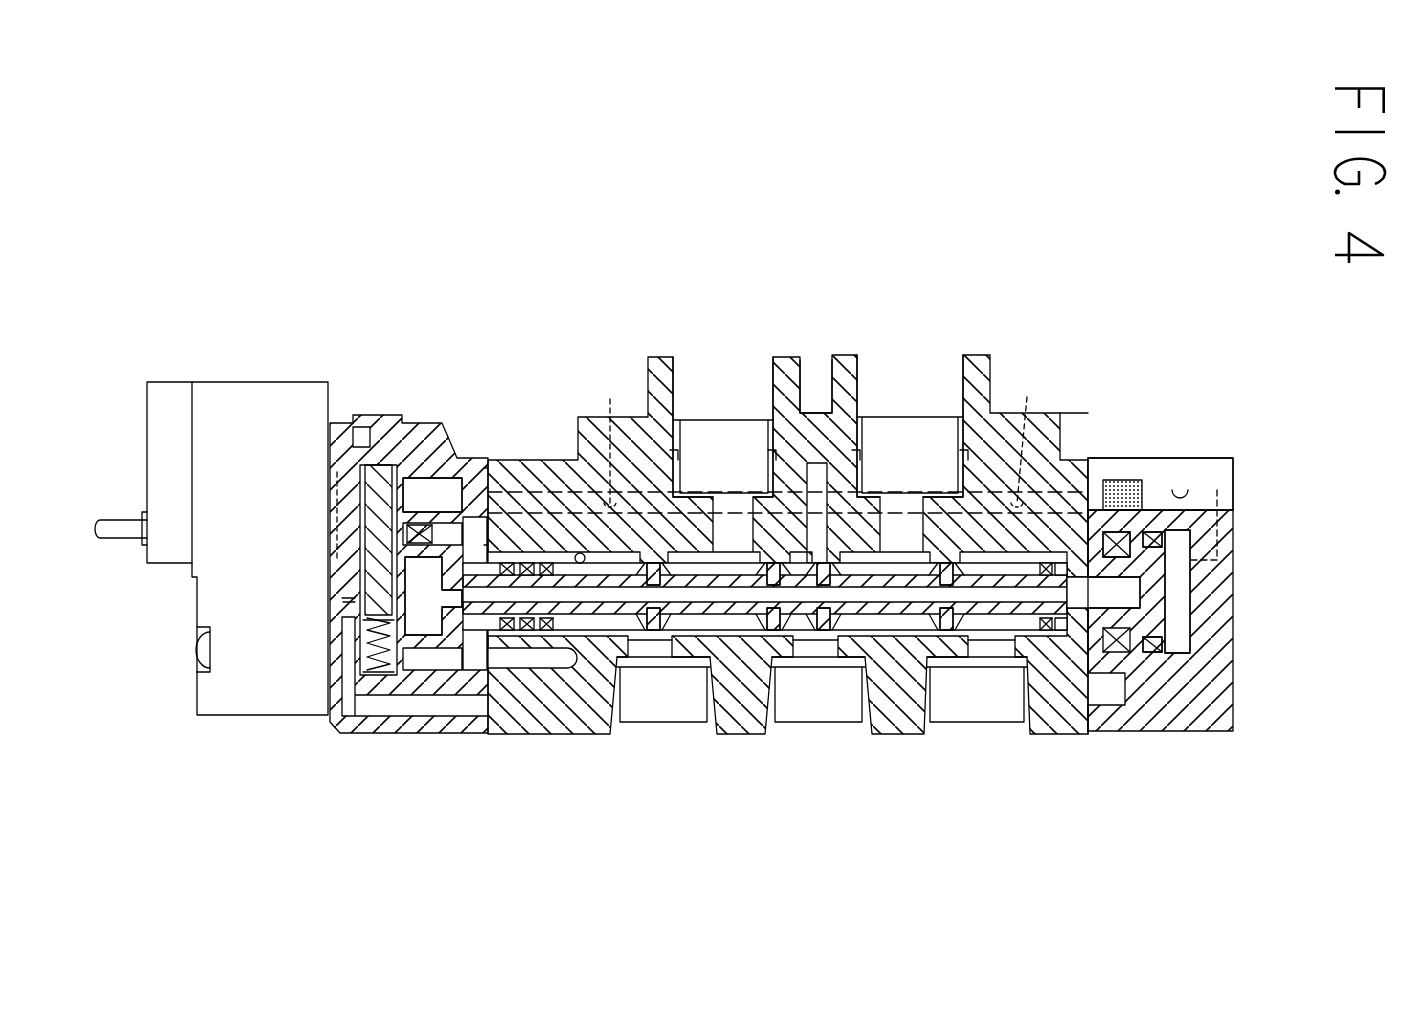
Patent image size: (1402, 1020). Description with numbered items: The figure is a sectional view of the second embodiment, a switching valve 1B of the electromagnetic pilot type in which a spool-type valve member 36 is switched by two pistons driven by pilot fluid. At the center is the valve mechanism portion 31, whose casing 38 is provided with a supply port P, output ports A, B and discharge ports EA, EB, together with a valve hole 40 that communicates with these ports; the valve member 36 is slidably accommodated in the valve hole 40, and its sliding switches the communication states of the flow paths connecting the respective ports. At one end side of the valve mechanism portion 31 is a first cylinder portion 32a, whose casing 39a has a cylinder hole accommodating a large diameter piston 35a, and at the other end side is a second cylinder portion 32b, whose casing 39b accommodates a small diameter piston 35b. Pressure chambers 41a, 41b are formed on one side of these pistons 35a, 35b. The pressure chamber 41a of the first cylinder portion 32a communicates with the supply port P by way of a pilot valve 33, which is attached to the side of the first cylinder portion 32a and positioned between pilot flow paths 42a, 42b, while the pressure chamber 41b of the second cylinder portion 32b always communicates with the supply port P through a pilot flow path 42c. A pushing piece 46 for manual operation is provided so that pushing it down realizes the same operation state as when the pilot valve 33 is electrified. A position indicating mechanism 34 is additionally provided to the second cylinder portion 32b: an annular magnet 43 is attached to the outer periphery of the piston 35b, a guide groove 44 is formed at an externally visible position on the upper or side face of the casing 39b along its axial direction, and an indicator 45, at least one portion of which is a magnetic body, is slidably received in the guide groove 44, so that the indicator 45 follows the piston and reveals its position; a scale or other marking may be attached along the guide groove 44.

The switching valve 1B is at (1125, 221).
The valve mechanism portion 31 is at (837, 271).
The first cylinder portion 32a is at (402, 355).
The second cylinder portion 32b is at (1131, 358).
The pilot valve 33 is at (260, 388).
The position indicating mechanism 34 is at (1163, 430).
The large diameter piston 35a is at (453, 530).
The small diameter piston 35b is at (1152, 608).
The valve member 36 is at (900, 605).
The casing 38 is at (550, 700).
The casing 39a is at (380, 722).
The casing 39b is at (1162, 700).
The valve hole 40 is at (579, 553).
The pressure chamber 41a is at (427, 610).
The pressure chamber 41b is at (1177, 630).
The pilot flow path 42a is at (607, 436).
The pilot flow path 42b is at (343, 600).
The pilot flow path 42c is at (1033, 435).
The annular magnet 43 is at (1112, 543).
The guide groove 44 is at (1187, 492).
The indicator 45 is at (1125, 490).
The pushing piece 46 is at (377, 420).
The output port A is at (725, 385).
The output port B is at (908, 378).
The supply port P is at (828, 695).
The discharge port EA is at (667, 697).
The discharge port EB is at (980, 690).